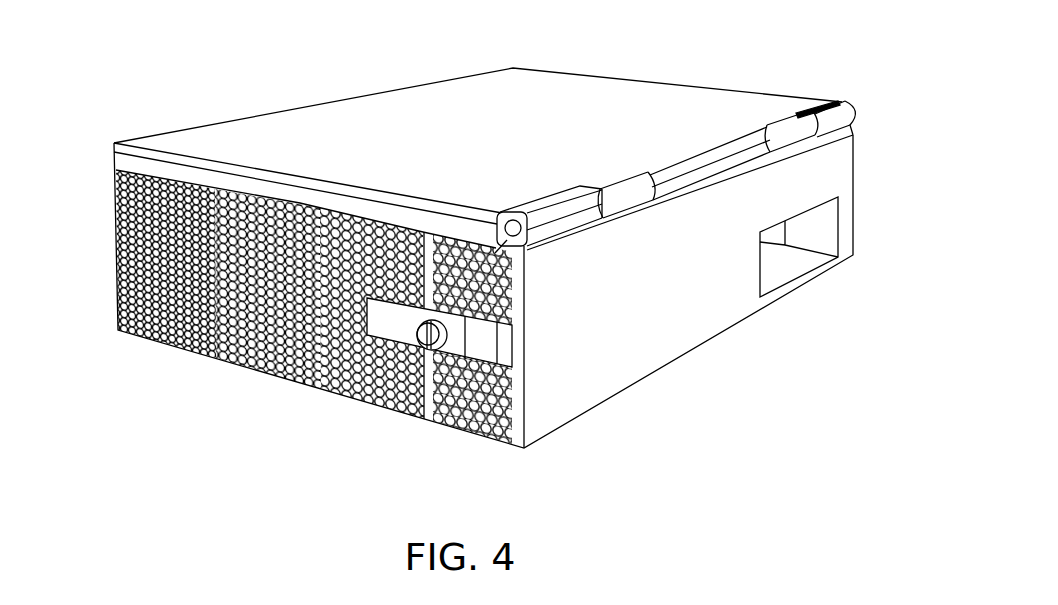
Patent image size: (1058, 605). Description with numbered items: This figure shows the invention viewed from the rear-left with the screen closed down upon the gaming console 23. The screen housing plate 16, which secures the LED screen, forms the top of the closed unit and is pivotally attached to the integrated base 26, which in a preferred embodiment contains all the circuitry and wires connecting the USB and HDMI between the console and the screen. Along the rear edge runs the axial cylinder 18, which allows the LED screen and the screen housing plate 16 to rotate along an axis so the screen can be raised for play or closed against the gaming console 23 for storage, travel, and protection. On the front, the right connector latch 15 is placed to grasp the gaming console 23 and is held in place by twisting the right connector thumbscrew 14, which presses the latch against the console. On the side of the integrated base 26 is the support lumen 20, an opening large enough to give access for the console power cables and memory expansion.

The right connector thumbscrew 14 is at (429, 351).
The right connector latch 15 is at (393, 318).
The screen housing plate 16 is at (447, 88).
The axial cylinder 18 is at (627, 187).
The support lumen 20 is at (857, 273).
The gaming console 23 is at (237, 363).
The integrated base 26 is at (665, 303).